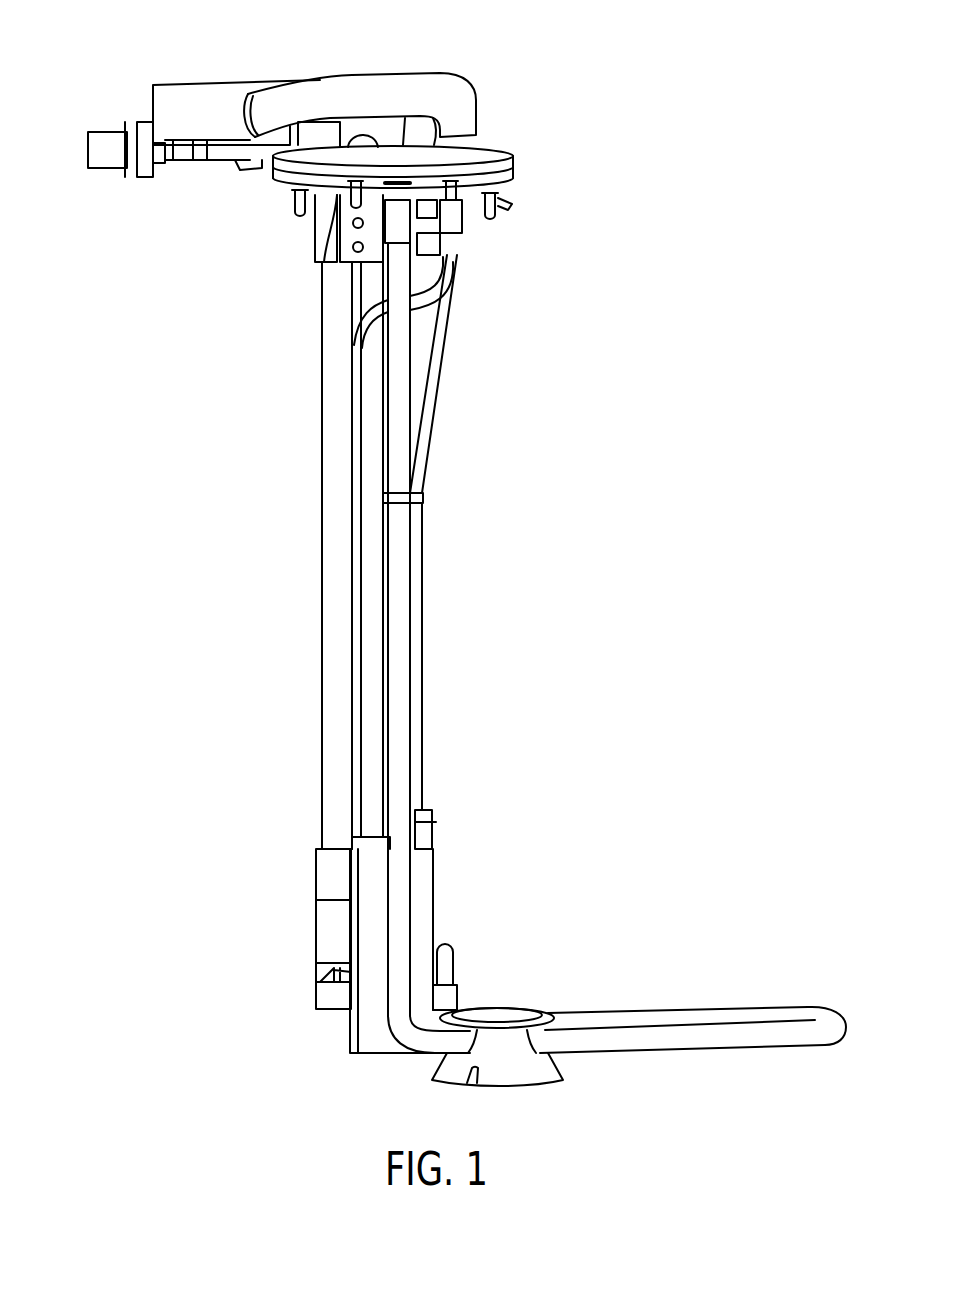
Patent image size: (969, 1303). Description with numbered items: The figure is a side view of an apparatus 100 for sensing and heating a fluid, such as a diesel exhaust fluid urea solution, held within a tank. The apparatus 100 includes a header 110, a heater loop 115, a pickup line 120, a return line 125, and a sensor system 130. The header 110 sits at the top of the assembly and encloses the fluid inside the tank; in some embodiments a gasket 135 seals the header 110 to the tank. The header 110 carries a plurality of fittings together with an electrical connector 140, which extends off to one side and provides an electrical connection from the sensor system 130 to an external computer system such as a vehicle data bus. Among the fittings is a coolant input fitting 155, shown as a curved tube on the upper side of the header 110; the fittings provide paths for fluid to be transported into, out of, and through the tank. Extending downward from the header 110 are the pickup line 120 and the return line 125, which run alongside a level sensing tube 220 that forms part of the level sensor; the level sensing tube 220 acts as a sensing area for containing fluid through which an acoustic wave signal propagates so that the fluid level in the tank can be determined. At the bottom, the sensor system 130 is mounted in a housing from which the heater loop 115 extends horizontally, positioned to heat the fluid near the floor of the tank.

The apparatus 100 is at (608, 80).
The header 110 is at (522, 168).
The heater loop 115 is at (740, 1015).
The pickup line 120 is at (437, 417).
The return line 125 is at (418, 295).
The sensor system 130 is at (287, 972).
The gasket 135 is at (513, 186).
The electrical connector 140 is at (103, 130).
The coolant input fitting 155 is at (385, 78).
The level sensing tube 220 is at (318, 690).